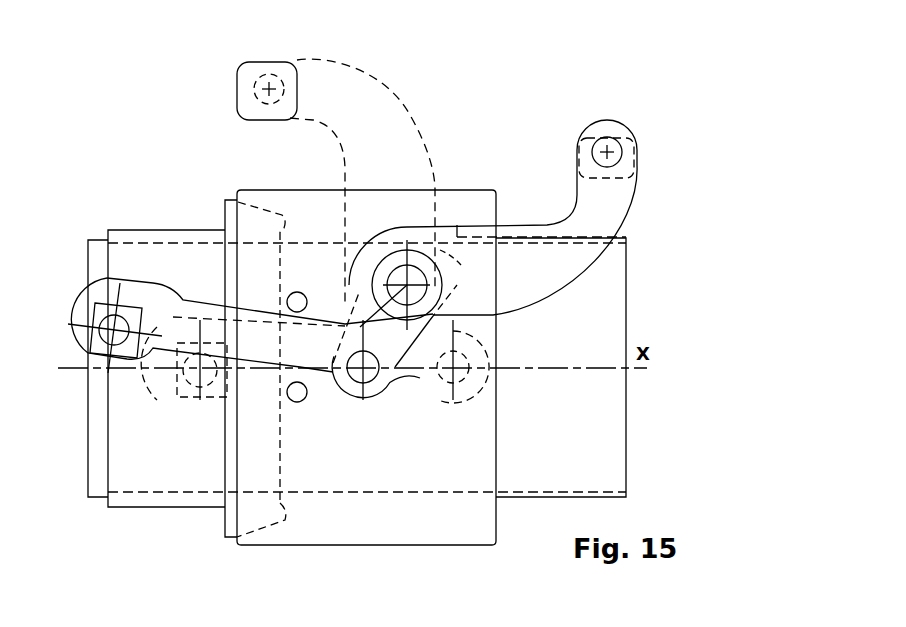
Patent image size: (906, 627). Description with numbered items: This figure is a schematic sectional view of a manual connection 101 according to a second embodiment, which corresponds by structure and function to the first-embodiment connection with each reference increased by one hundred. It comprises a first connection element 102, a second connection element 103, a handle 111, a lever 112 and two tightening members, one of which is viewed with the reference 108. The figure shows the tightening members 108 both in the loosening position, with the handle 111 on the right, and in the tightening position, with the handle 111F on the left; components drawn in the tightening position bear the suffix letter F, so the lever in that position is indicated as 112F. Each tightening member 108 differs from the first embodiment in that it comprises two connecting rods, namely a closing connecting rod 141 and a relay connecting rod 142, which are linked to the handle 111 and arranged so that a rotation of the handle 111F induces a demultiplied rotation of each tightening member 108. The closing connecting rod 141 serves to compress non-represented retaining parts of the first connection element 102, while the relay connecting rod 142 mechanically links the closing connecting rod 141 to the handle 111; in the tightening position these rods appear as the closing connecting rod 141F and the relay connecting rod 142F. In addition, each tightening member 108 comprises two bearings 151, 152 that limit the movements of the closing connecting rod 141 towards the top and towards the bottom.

The manual connection 101 is at (106, 534).
The first connection element 102 is at (173, 497).
The second connection element 103 is at (377, 513).
The tightening member 108 is at (200, 262).
The handle 111 is at (610, 140).
The handle in tightening position 111F is at (262, 80).
The lever 112 is at (592, 203).
The pivot arm in alternate position 112F is at (338, 110).
The closing connecting rod 141 is at (73, 338).
The closing connecting rod in tightening position 141F is at (173, 388).
The relay connecting rod 142 is at (373, 397).
The relay connecting rod in tightening position 142F is at (467, 397).
The bearing 151 is at (297, 291).
The bearing 152 is at (297, 402).